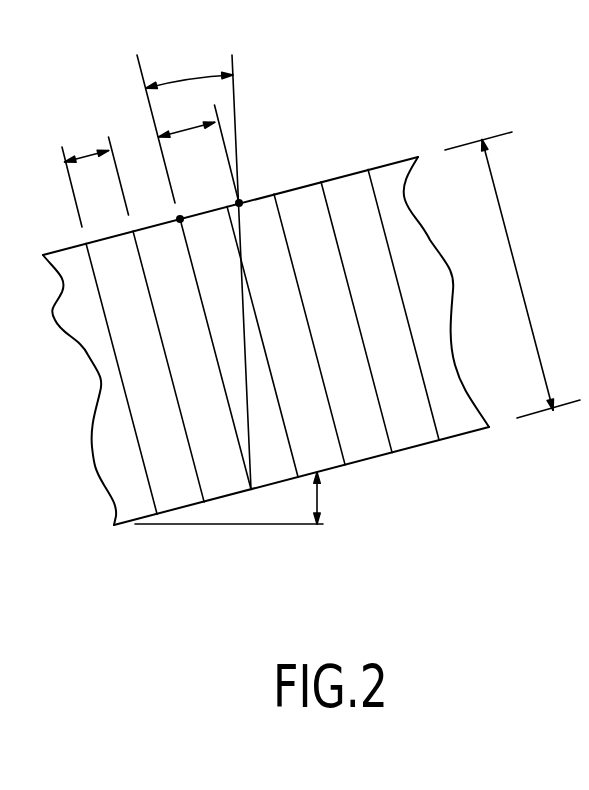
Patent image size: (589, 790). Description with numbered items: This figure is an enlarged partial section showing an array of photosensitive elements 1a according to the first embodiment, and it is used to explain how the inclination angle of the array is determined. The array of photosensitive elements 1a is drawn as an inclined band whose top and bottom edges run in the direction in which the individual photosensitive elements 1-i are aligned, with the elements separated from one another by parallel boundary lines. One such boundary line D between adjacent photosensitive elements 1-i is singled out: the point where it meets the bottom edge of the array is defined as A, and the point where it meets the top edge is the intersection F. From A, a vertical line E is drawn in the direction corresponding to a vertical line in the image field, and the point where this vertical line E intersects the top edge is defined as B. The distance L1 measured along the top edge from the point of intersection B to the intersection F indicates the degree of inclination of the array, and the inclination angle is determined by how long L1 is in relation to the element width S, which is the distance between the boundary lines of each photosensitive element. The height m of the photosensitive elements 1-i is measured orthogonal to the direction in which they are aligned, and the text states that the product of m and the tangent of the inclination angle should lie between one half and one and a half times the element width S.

The array of photosensitive elements 1a is at (258, 335).
The photosensitive elements 1-i is at (301, 502).
The boundary line D is at (224, 390).
The vertical line E is at (236, 89).
The point of intersection B is at (241, 200).
The intersection F is at (177, 218).
The point A is at (251, 496).
The element width S is at (95, 169).
The distance L1 is at (188, 129).
The height of photosensitive elements m is at (512, 275).